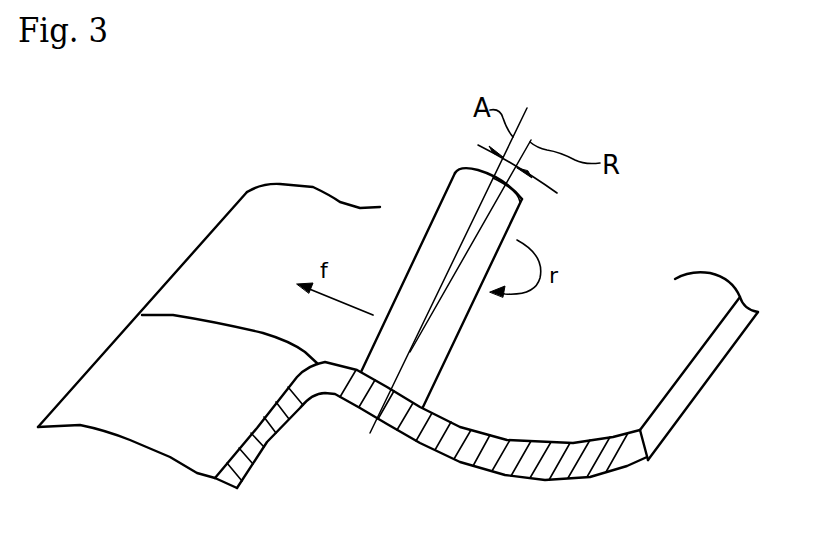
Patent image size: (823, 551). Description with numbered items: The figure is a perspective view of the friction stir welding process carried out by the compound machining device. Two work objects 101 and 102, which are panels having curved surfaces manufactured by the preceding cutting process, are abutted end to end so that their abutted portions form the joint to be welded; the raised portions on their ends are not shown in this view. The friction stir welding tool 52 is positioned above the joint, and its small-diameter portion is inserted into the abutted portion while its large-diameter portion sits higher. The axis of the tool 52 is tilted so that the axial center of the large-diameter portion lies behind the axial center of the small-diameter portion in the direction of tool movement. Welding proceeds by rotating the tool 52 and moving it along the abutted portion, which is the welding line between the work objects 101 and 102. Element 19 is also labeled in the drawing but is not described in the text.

The rotary tool 19 is at (453, 270).
The friction stir welding tool 52 is at (453, 348).
The work object 101 is at (220, 252).
The work object 102 is at (168, 337).